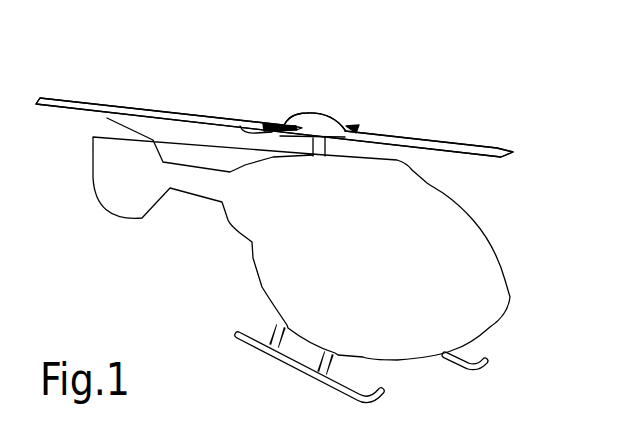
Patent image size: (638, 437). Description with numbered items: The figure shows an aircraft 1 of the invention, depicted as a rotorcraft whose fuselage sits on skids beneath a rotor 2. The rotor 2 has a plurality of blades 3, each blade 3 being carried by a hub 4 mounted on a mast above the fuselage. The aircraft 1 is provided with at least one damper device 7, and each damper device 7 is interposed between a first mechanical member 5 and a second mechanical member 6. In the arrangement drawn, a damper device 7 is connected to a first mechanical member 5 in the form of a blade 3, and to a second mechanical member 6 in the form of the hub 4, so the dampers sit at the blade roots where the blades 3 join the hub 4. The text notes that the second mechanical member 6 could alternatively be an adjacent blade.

The aircraft 1 is at (512, 297).
The rotor 2 is at (287, 85).
The blade 3 is at (500, 146).
The hub 4 is at (332, 122).
The first mechanical member 5 is at (127, 107).
The second mechanical member 6 is at (314, 121).
The damper device 7 is at (244, 128).